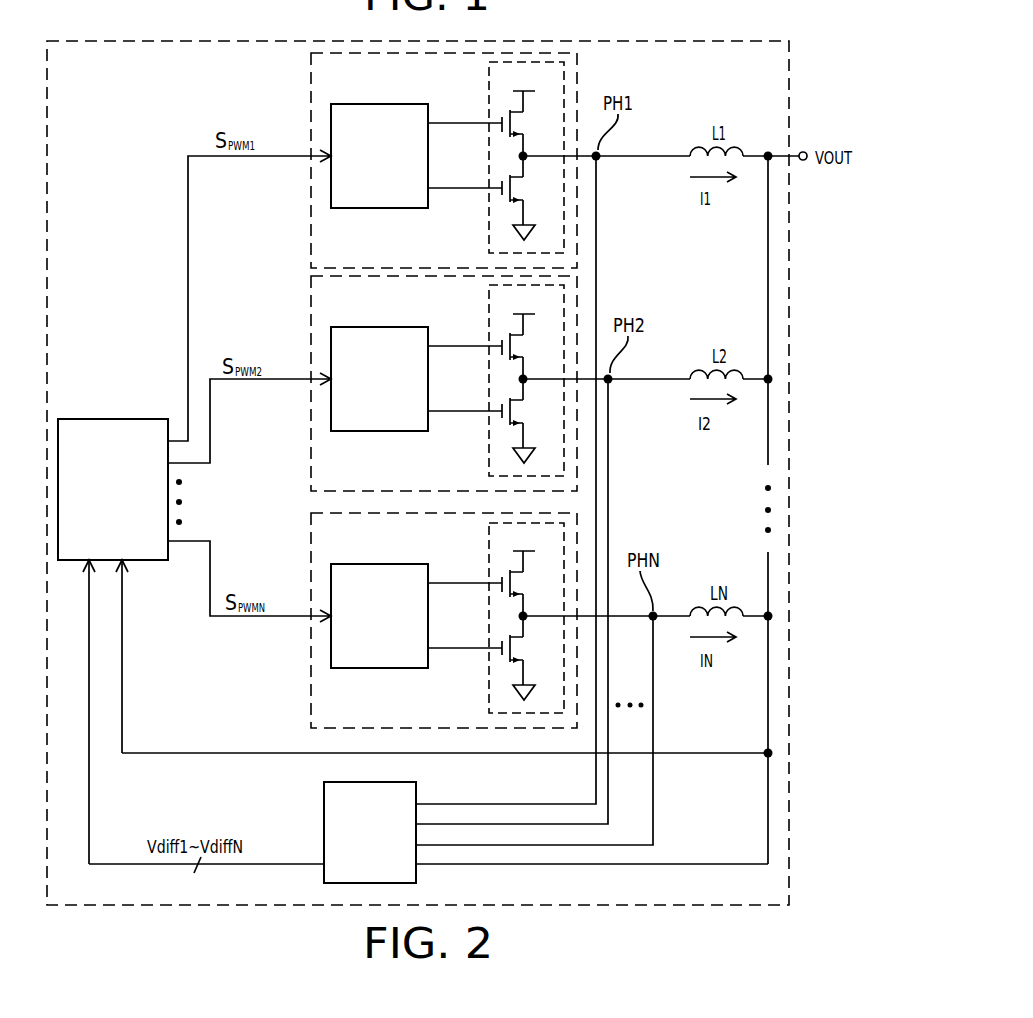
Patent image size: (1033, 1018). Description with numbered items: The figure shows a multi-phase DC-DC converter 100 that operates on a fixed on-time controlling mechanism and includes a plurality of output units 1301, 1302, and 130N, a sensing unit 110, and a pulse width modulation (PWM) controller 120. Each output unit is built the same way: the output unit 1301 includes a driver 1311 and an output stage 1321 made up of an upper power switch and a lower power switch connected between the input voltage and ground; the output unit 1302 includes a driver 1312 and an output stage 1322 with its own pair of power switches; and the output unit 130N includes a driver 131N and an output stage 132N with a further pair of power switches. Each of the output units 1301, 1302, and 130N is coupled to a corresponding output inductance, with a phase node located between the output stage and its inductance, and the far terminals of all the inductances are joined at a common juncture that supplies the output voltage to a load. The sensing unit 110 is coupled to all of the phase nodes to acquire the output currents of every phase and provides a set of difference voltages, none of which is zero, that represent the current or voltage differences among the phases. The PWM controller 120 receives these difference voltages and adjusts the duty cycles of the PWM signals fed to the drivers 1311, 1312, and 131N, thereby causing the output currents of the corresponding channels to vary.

The multi-phase DC-DC converter 100 is at (727, 41).
The sensing unit 110 is at (324, 832).
The pulse width modulation (PWM) controller 120 is at (120, 419).
The output unit 1301 is at (311, 82).
The output unit 1302 is at (311, 305).
The output unit 130N is at (311, 541).
The driver 1311 is at (383, 104).
The driver 1312 is at (383, 327).
The driver 131N is at (383, 564).
The output stage 1321 is at (489, 91).
The output stage 1322 is at (489, 314).
The output stage 132N is at (489, 551).